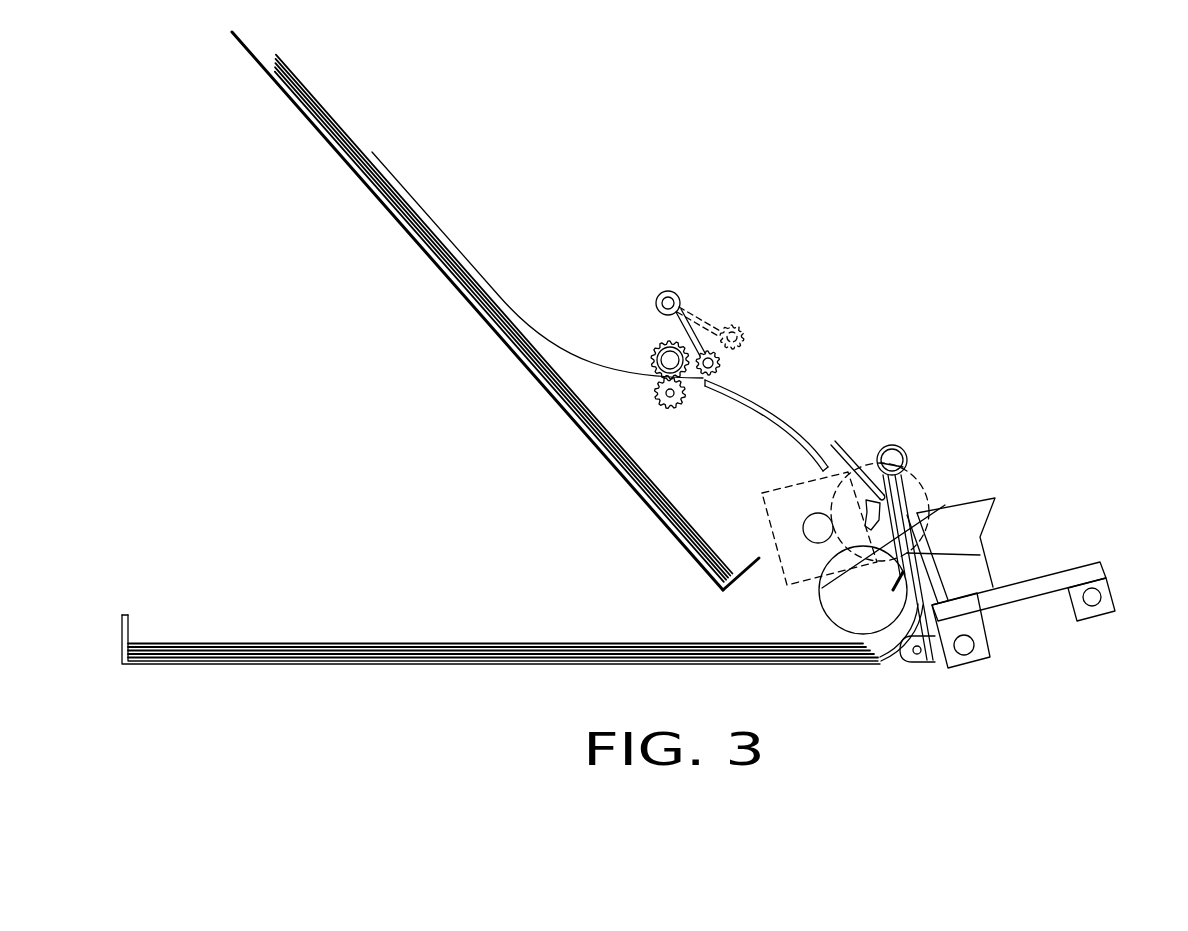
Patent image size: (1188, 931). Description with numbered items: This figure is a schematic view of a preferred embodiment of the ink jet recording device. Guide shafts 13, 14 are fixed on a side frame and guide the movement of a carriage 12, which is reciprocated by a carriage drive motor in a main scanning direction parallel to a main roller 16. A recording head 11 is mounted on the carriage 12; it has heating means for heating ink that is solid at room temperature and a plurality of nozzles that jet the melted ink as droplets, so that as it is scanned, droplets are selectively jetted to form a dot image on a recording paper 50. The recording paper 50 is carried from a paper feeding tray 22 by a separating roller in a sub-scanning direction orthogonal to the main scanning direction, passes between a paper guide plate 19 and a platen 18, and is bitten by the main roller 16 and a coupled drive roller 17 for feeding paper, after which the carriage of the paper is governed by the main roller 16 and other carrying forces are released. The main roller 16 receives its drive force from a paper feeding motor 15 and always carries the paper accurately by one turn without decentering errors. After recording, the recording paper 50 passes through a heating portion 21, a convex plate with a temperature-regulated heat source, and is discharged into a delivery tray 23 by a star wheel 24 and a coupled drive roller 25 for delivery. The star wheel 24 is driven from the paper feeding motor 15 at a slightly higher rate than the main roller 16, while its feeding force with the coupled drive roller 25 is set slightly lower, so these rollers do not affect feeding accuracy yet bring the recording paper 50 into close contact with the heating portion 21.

The recording head 11 is at (913, 518).
The carriage 12 is at (1071, 575).
The guide shaft 13 is at (975, 645).
The guide shaft 14 is at (1102, 597).
The paper feeding motor 15 is at (765, 533).
The main roller 16 is at (872, 472).
The coupled drive roller for feeding paper 17 is at (913, 497).
The platen 18 is at (818, 606).
The paper guide plate 19 is at (980, 555).
The heating portion 21 is at (754, 400).
The paper feeding tray 22 is at (405, 660).
The delivery tray 23 is at (330, 140).
The star wheel 24 is at (671, 409).
The coupled drive roller for delivery 25 is at (657, 347).
The recording paper 50 is at (556, 338).